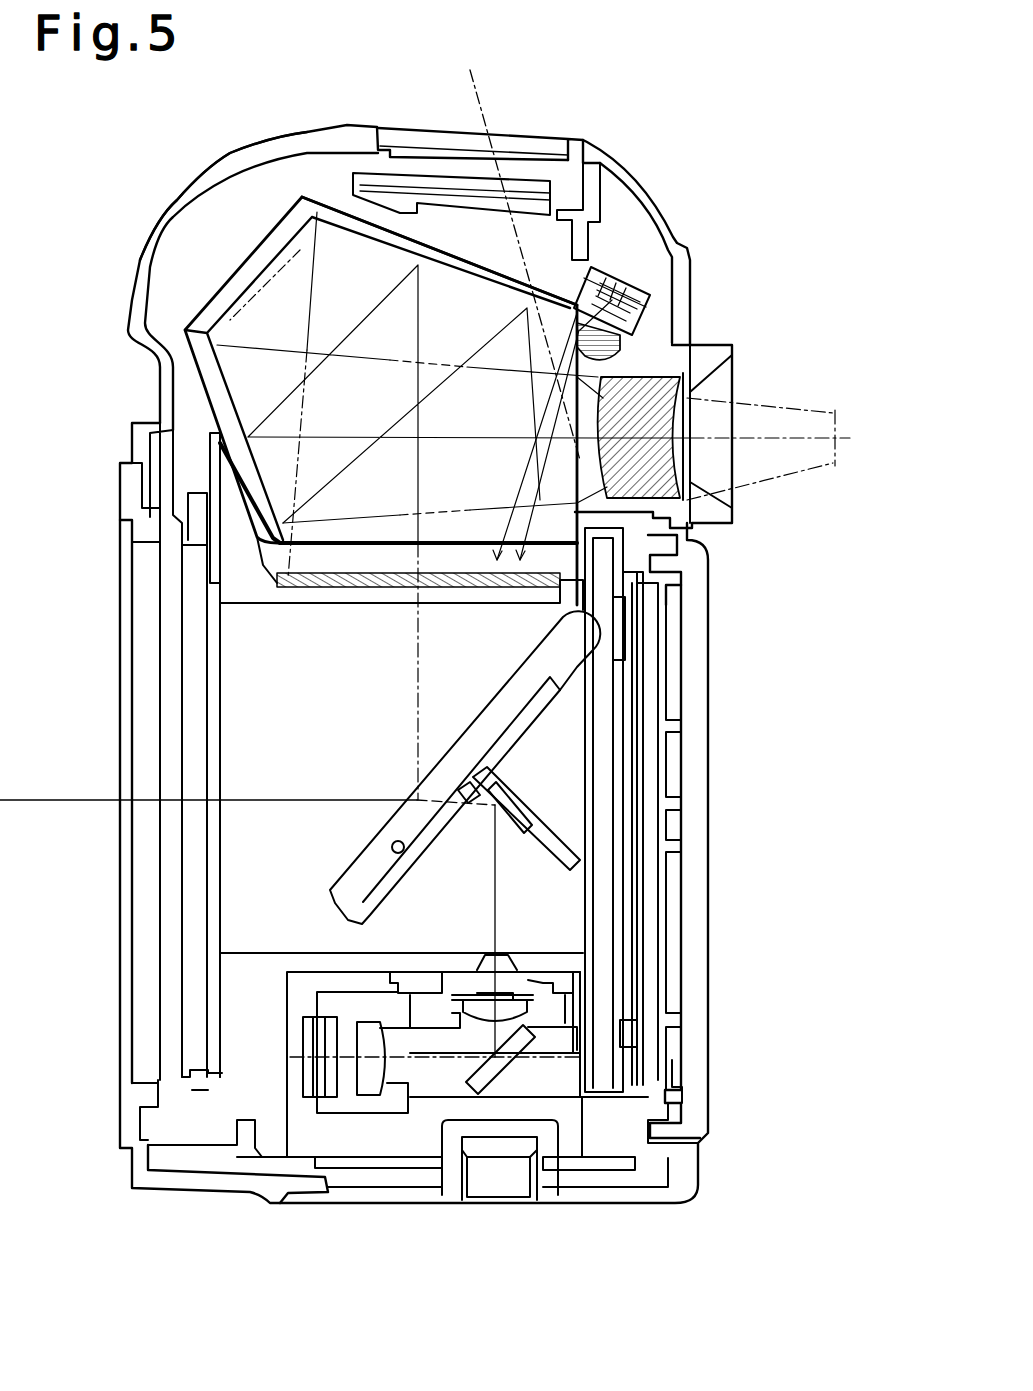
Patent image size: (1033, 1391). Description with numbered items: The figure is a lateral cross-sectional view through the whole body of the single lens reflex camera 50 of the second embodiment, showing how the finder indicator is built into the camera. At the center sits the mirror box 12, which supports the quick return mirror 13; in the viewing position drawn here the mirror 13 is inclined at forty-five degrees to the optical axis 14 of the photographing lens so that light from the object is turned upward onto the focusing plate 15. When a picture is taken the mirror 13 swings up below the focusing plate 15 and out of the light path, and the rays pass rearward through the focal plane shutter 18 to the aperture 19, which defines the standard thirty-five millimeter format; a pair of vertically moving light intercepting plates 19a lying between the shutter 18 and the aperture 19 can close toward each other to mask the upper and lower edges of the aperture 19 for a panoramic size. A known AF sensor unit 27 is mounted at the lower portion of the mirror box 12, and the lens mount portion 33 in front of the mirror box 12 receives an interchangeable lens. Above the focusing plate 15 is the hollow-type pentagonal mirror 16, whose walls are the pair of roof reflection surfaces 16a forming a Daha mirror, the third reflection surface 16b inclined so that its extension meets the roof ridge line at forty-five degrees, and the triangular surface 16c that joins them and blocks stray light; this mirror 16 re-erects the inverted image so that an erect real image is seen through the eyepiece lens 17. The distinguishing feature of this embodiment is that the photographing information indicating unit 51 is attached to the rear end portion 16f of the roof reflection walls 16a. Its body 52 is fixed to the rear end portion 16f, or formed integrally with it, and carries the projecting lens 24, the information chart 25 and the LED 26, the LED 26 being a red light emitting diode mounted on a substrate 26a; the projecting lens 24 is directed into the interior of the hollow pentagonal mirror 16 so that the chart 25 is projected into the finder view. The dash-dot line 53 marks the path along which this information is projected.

The mirror box 12 is at (240, 1033).
The quick return mirror 13 is at (398, 853).
The optical axis 14 is at (42, 800).
The focusing plate 15 is at (300, 580).
The hollow-type pentagonal mirror 16 is at (240, 350).
The roof reflection surfaces 16a is at (333, 208).
The third reflection surface 16b is at (213, 400).
The triangular surface 16c is at (277, 243).
The rear end portion 16f is at (538, 257).
The eyepiece lens 17 is at (687, 430).
The focal plane shutter 18 is at (603, 970).
The aperture 19 is at (640, 650).
The light intercepting plates 19a is at (620, 635).
The projecting lens 24 is at (700, 352).
The information chart 25 is at (653, 317).
The LED 26 is at (653, 293).
The substrate 26a is at (645, 250).
The AF sensor unit 27 is at (375, 1140).
The lens mount portion 33 is at (143, 953).
The single lens reflex camera 50 is at (846, 60).
The photographing information indicating unit 51 is at (628, 287).
The body 52 is at (660, 340).
The photometric optical axis 53 is at (512, 249).